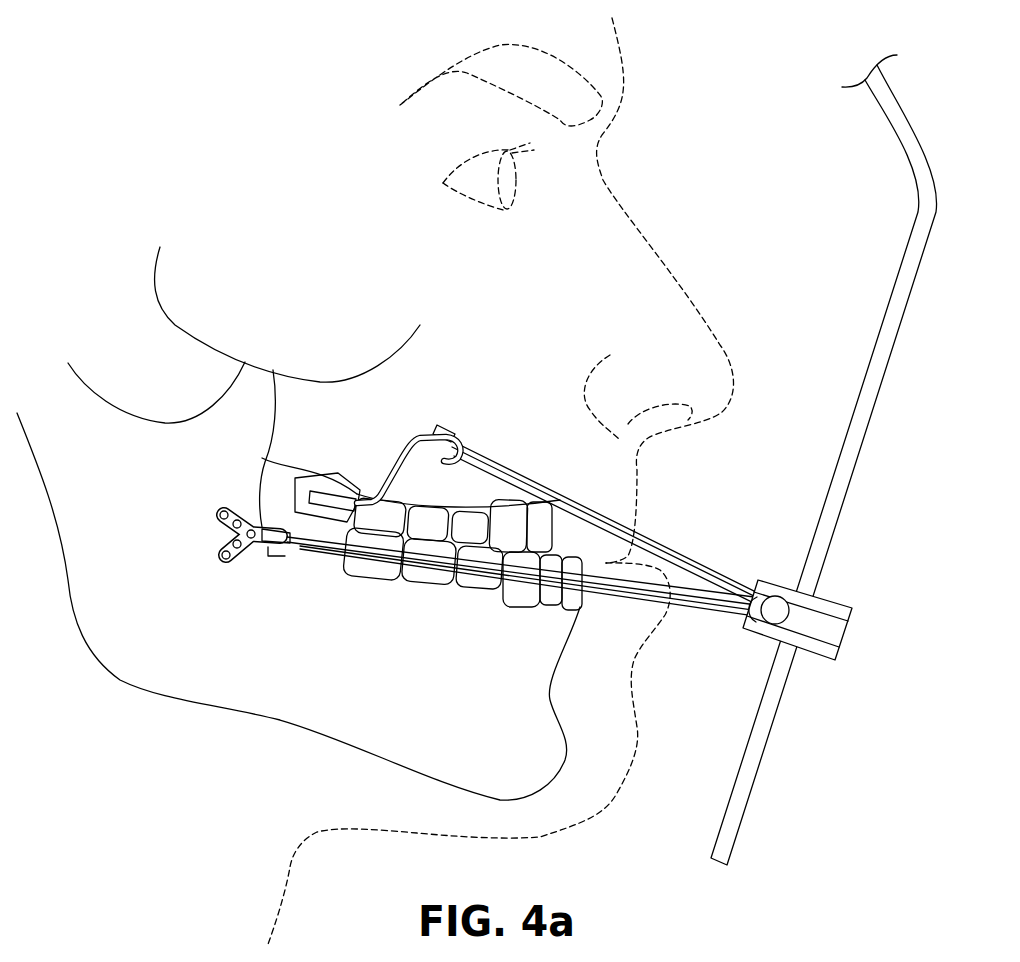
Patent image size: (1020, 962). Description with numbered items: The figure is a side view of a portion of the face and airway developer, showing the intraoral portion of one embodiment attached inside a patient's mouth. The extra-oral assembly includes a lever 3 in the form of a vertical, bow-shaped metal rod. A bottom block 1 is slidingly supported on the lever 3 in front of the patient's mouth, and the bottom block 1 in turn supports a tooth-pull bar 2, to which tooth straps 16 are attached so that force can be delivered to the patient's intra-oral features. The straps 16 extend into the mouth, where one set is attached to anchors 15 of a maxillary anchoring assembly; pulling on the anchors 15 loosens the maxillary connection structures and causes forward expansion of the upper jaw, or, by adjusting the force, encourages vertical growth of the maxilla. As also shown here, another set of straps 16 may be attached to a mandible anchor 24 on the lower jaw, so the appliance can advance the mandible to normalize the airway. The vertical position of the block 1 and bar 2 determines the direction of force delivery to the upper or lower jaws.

The bottom block 1 is at (847, 634).
The tooth-pull bar 2 is at (780, 596).
The lever 3 is at (853, 410).
The anchors 15 is at (410, 440).
The tooth straps 16 is at (603, 512).
The mandible anchor 24 is at (220, 515).